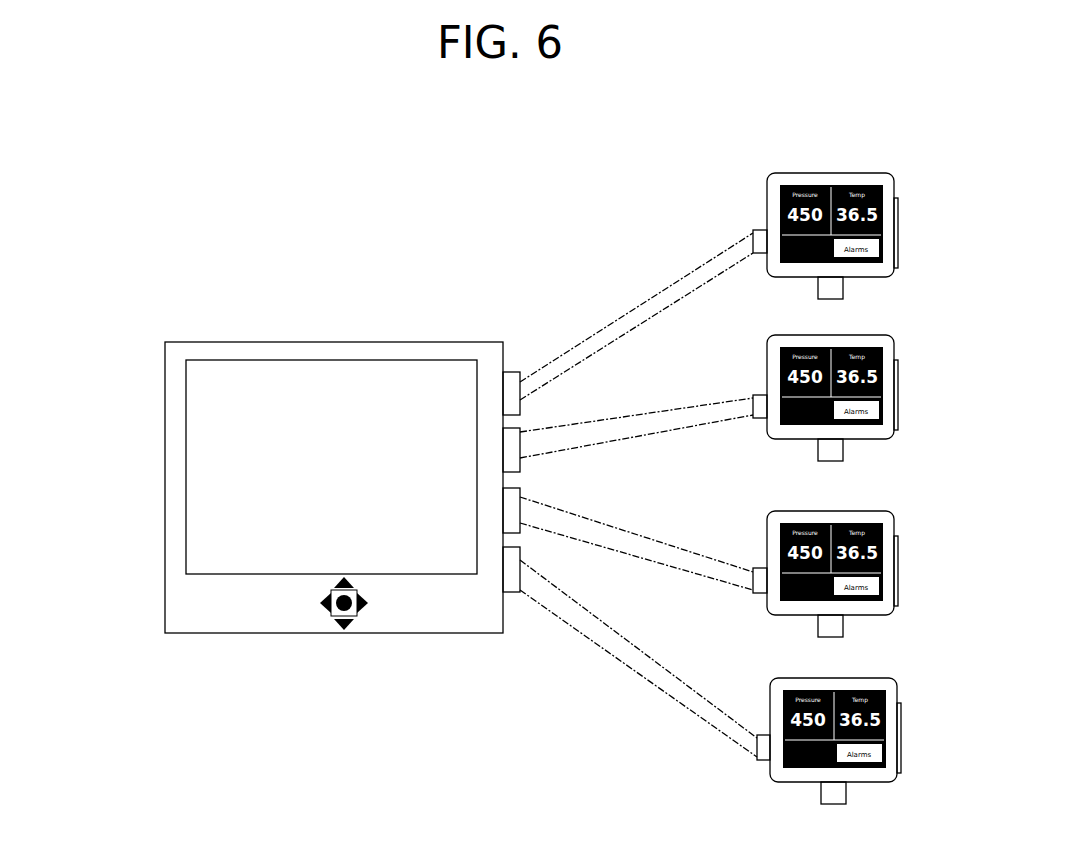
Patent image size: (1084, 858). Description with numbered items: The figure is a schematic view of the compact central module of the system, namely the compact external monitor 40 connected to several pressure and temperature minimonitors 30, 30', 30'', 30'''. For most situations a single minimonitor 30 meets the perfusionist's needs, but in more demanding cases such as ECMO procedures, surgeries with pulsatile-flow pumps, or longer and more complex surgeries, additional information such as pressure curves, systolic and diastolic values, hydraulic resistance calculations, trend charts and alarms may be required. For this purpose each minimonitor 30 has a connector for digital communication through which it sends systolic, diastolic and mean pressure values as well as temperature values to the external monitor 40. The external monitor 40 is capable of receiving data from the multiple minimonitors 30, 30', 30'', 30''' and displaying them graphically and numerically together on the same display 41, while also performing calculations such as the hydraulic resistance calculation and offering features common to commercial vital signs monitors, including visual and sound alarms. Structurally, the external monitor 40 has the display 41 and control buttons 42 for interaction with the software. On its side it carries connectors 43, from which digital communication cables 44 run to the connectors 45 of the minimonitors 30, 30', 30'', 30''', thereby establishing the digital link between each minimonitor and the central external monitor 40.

The pressure and temperature minimonitor 30 is at (860, 218).
The minimonitor 30' is at (861, 381).
The minimonitor 30'' is at (864, 556).
The minimonitor 30''' is at (867, 724).
The external monitor 40 is at (163, 468).
The display 41 is at (207, 533).
The control buttons 42 is at (334, 614).
The connectors 43 is at (520, 568).
The digital communication cables 44 is at (607, 622).
The connectors 45 is at (757, 745).